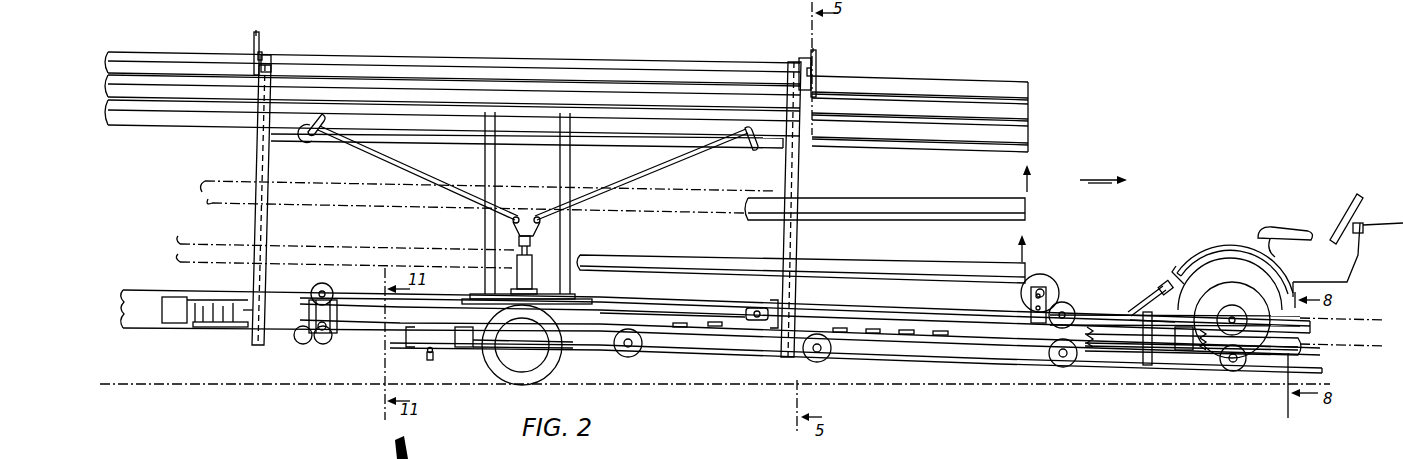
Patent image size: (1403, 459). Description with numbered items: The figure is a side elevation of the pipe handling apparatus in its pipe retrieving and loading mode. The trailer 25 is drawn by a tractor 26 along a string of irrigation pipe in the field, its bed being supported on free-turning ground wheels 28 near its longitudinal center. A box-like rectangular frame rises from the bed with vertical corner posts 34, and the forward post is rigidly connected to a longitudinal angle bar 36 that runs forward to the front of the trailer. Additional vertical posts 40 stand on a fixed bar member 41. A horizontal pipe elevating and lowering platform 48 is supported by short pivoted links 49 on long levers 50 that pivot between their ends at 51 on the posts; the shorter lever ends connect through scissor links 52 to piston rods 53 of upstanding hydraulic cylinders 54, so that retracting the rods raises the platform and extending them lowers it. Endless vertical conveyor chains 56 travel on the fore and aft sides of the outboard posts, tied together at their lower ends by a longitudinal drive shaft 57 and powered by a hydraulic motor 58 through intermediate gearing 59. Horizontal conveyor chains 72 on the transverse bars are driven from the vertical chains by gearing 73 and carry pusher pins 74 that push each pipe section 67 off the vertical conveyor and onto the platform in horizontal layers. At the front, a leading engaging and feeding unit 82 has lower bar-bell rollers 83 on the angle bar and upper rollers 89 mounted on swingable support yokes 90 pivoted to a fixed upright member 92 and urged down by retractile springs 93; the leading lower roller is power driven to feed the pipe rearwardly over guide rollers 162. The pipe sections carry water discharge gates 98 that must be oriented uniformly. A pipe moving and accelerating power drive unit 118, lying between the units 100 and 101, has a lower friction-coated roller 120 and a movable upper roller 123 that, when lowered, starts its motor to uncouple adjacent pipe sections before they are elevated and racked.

The trailer 25 is at (520, 58).
The tractor 26 is at (1233, 240).
The ground wheels 28 is at (520, 376).
The vertical corner posts 34 is at (270, 230).
The angle bar 36 is at (960, 360).
The vertical posts 40 is at (500, 165).
The fixed bar member 41 is at (496, 292).
The pipe elevating and lowering platform 48 is at (643, 152).
The pivoted links 49 is at (312, 137).
The long levers 50 is at (420, 172).
The lever pivot 51 is at (482, 210).
The scissor links 52 is at (521, 218).
The piston rods 53 is at (535, 248).
The hydraulic cylinders 54 is at (540, 282).
The vertical conveyor chains 56 is at (254, 222).
The longitudinal drive shaft 57 is at (616, 320).
The hydraulic motor 58 is at (762, 308).
The intermediate gearing 59 is at (760, 335).
The pipe sections 67 is at (192, 128).
The horizontal conveyor chains 72 is at (255, 55).
The gearing 73 is at (270, 60).
The pusher pins 74 is at (258, 34).
The leading engaging and feeding unit 82 is at (1106, 304).
The lower rollers 83 is at (1060, 367).
The upper rollers 89 is at (1048, 286).
The support yokes 90 is at (1144, 292).
The fixed upright member 92 is at (1143, 358).
The retractile springs 93 is at (1095, 358).
The water discharge gates 98 is at (700, 328).
The unit 100 is at (429, 362).
The unit 101 is at (215, 337).
The pipe moving and accelerating power drive unit 118 is at (300, 347).
The lower friction-coated bar bell roller 120 is at (328, 345).
The upper roller 123 is at (314, 285).
The guide rollers 162 is at (626, 358).